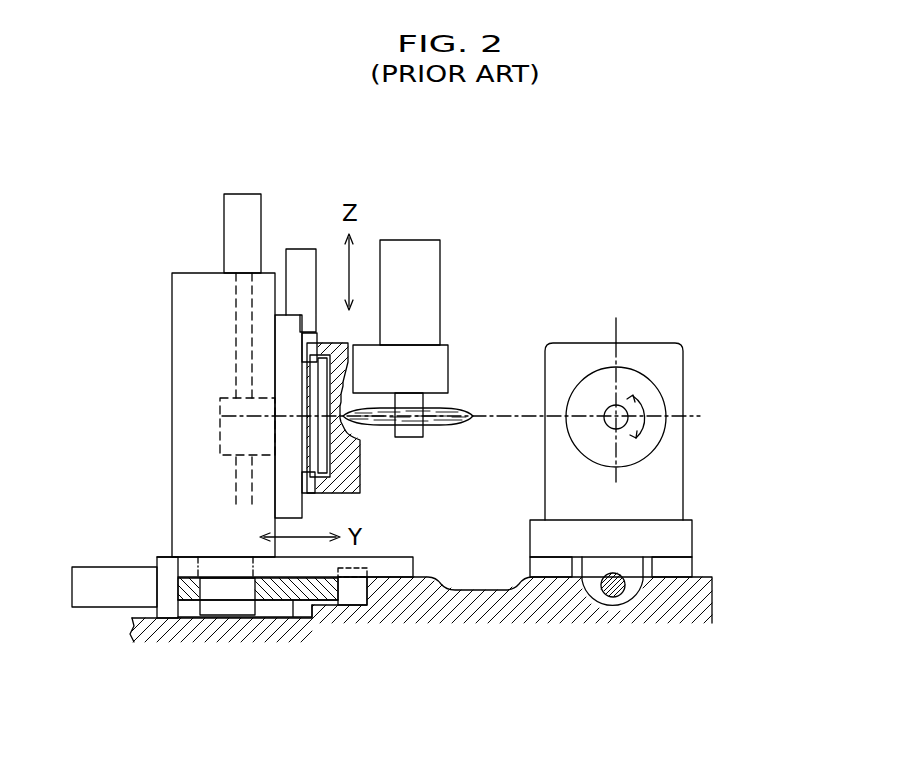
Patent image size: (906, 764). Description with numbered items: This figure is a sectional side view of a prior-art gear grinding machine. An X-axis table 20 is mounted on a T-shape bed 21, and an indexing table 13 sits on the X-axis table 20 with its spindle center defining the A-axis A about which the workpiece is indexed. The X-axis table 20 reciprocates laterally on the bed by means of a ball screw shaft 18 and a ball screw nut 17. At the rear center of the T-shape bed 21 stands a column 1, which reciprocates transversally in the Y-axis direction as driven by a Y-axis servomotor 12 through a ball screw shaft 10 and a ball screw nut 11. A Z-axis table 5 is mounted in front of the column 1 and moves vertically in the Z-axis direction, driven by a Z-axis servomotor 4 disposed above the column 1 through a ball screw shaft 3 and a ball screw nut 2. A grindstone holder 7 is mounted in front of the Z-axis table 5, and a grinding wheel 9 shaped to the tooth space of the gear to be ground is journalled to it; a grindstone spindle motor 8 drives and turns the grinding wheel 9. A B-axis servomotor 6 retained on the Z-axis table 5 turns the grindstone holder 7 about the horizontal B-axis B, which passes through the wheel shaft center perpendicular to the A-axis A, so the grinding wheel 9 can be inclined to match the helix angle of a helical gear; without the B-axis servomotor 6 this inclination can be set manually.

The column 1 is at (172, 502).
The ball screw nut 2 is at (217, 415).
The ball screw shaft 3 is at (233, 343).
The Z-axis servomotor 4 is at (243, 194).
The Z-axis table 5 is at (285, 347).
The B-axis servomotor 6 is at (307, 248).
The grindstone holder 7 is at (448, 370).
The grindstone spindle motor 8 is at (412, 240).
The grinding wheel 9 is at (458, 425).
The ball screw shaft 10 is at (293, 600).
The ball screw nut 11 is at (233, 608).
The Y-axis servomotor 12 is at (100, 600).
The indexing table 13 is at (628, 343).
The ball screw nut 17 is at (632, 593).
The ball screw shaft 18 is at (607, 597).
The X-axis table 20 is at (692, 538).
The T-shape bed 21 is at (550, 608).
The A-axis A is at (620, 410).
The B-axis B is at (285, 415).